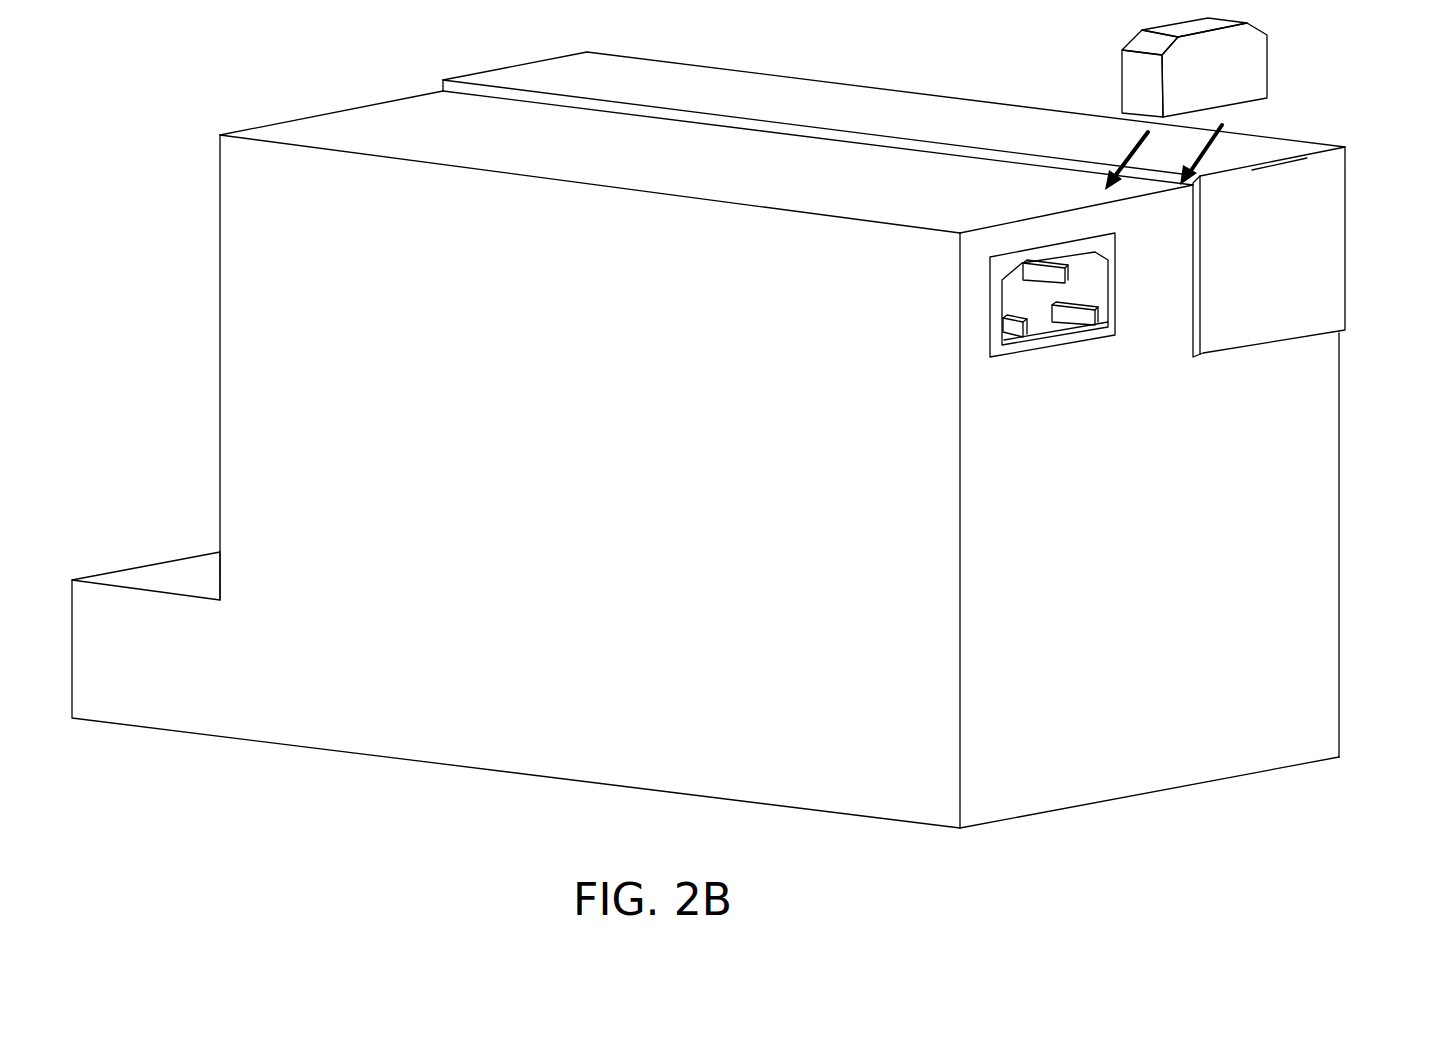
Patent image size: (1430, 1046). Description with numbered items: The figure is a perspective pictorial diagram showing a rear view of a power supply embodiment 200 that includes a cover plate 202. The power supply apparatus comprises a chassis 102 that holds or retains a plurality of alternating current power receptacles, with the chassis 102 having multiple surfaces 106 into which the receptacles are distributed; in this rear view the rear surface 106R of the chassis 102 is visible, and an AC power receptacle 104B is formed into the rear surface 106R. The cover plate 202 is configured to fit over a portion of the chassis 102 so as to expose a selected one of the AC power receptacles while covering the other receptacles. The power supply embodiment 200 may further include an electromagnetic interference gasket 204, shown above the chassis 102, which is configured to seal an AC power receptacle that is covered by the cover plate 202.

The power supply embodiment 200 is at (150, 202).
The chassis 102 is at (220, 393).
The AC power receptacle 104B is at (1042, 320).
The multiple surfaces 106 is at (257, 170).
The rear surface 106R is at (1292, 427).
The cover plate 202 is at (797, 85).
The electromagnetic interference (EMI) gasket 204 is at (1133, 80).